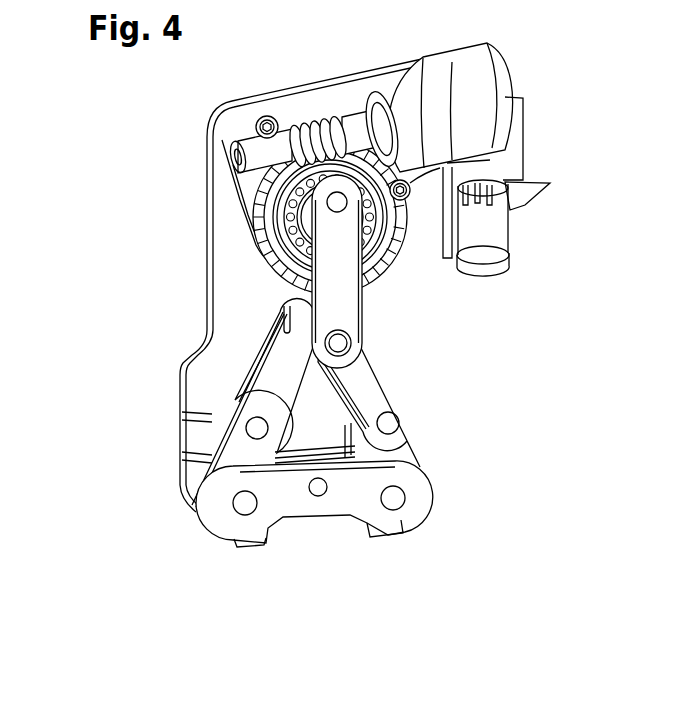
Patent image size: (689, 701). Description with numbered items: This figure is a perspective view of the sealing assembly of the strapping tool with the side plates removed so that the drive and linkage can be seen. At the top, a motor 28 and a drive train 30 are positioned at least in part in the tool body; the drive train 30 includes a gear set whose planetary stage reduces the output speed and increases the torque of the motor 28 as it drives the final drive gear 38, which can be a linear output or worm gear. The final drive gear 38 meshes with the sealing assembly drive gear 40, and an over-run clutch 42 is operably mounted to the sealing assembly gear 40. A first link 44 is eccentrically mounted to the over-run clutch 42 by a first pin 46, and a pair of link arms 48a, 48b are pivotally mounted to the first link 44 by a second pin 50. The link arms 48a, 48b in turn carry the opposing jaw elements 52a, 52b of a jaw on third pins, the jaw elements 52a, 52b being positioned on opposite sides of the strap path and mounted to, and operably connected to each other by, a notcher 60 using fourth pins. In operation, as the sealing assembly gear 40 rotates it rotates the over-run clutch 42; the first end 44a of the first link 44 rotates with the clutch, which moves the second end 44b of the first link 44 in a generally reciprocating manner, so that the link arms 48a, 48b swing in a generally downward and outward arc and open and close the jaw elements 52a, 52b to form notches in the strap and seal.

The motor 28 is at (483, 84).
The drive train 30 is at (420, 73).
The final drive gear 38 is at (320, 127).
The sealing assembly drive gear 40 is at (388, 252).
The over-run clutch 42 is at (262, 271).
The first link 44 is at (353, 291).
The first end of the first link 44a is at (327, 224).
The second end of the first link 44b is at (360, 328).
The first pin 46 is at (338, 204).
The link arm 48a is at (383, 398).
The link arm 48b is at (258, 397).
The second pin 50 is at (348, 347).
The jaw element 52a is at (240, 547).
The jaw element 52b is at (385, 538).
The notcher 60 is at (418, 503).